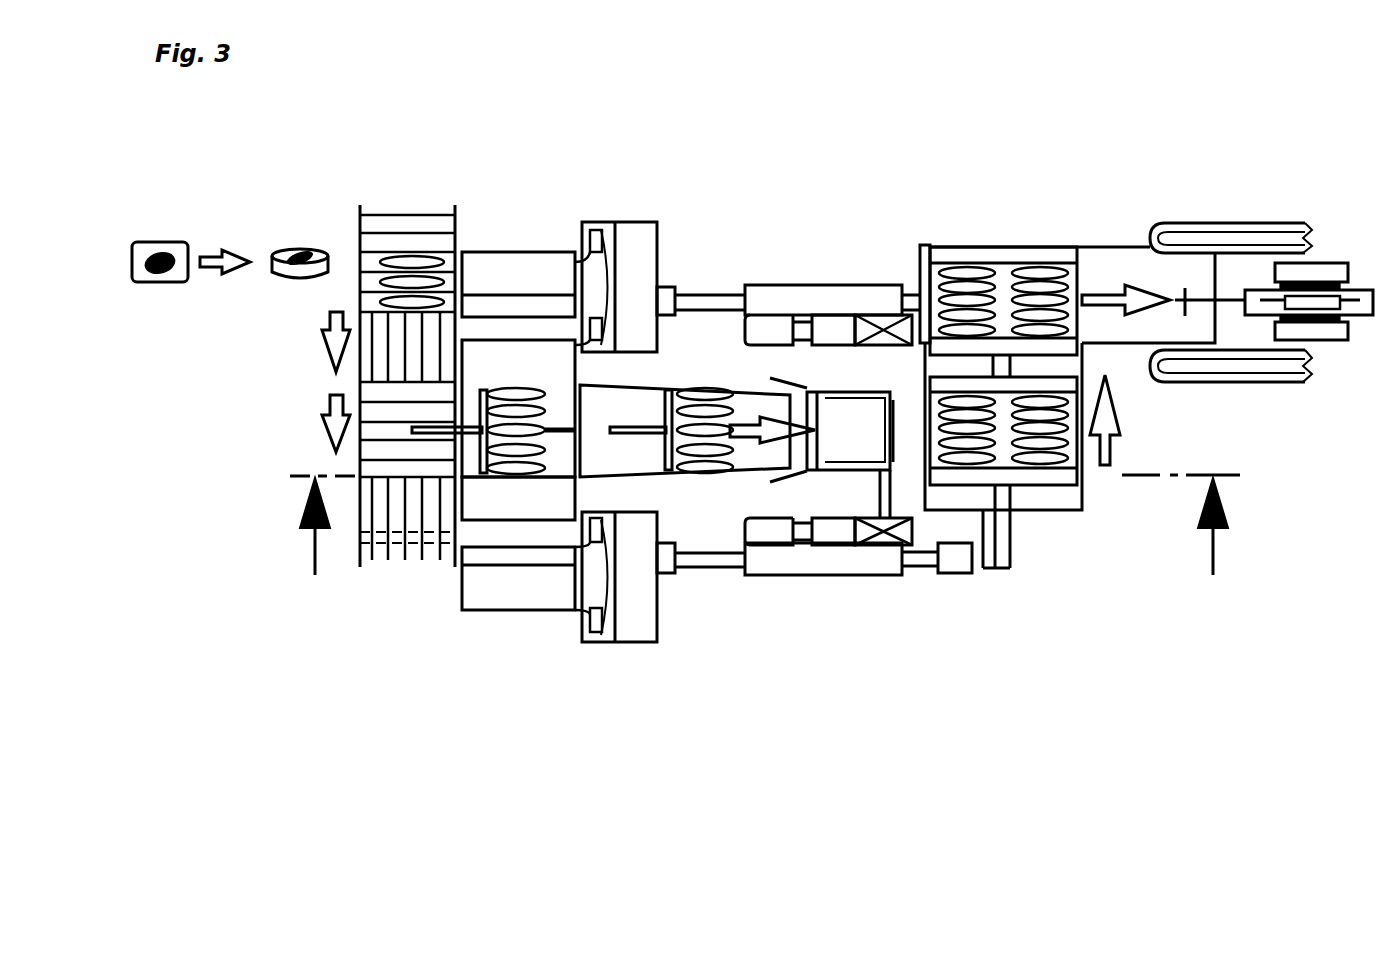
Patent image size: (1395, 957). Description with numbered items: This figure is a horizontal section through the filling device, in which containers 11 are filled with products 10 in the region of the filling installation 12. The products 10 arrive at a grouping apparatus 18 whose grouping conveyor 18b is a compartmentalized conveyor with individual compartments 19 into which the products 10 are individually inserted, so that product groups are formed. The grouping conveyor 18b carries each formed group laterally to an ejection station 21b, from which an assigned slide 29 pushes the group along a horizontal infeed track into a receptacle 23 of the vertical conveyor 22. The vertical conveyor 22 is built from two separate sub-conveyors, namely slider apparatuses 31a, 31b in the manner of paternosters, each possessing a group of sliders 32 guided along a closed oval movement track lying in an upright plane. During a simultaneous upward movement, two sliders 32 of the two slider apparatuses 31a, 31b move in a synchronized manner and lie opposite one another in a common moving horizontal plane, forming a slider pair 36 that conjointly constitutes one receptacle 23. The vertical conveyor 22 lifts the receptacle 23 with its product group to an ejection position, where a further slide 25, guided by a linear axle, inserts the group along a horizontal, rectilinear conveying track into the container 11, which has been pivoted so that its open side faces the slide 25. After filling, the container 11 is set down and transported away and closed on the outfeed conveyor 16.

The product 10 is at (165, 243).
The container 11 is at (852, 410).
The filling installation 12 is at (712, 651).
The outfeed conveyor 16 is at (1153, 193).
The grouping apparatus 18 is at (378, 417).
The grouping conveyor 18b is at (400, 215).
The compartment 19 is at (367, 258).
The ejection station 21b is at (343, 461).
The vertical conveyor 22 is at (691, 203).
The receptacle 23 is at (512, 355).
The slide 25 is at (660, 390).
The slide 29 is at (478, 450).
The slider apparatus 31a is at (600, 172).
The slider apparatus 31b is at (637, 643).
The slider 32 is at (545, 497).
The slider pair 36 is at (508, 528).